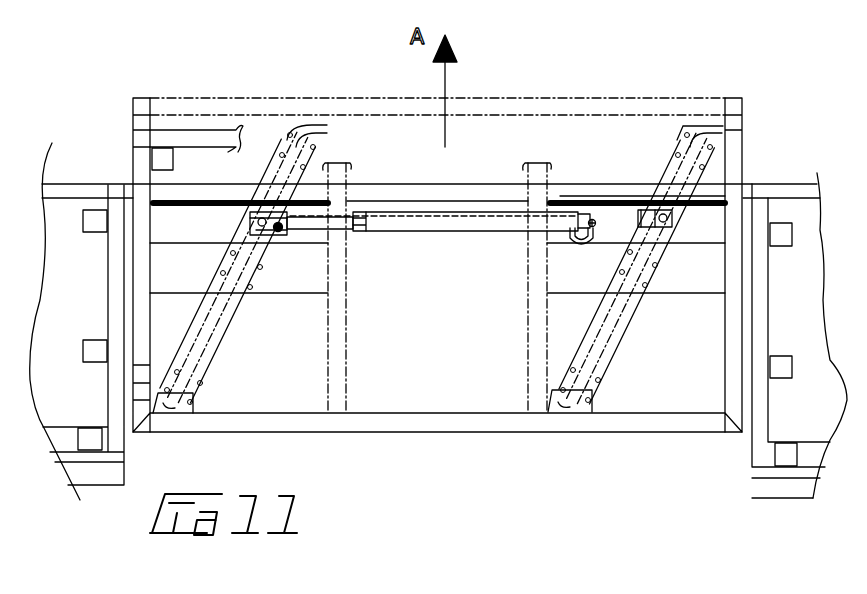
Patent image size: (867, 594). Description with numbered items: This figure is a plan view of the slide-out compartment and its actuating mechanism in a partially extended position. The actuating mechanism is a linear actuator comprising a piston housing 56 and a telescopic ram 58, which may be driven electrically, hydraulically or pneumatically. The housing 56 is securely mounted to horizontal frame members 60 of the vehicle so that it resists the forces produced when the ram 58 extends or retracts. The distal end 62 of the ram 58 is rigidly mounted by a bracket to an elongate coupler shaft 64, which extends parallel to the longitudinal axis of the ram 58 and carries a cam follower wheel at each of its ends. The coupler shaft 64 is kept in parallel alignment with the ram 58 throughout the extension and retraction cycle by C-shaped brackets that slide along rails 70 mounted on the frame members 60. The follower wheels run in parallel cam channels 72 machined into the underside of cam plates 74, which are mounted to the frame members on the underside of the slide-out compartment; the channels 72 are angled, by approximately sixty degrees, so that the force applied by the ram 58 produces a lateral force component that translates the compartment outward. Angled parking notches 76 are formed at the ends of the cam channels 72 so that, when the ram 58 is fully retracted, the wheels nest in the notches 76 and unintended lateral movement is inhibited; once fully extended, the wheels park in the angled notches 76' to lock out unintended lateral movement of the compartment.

The piston housing 56 is at (450, 232).
The telescopic ram 58 is at (323, 224).
The horizontal frame members 60 is at (571, 193).
The distal end 62 is at (308, 228).
The coupler shaft 64 is at (443, 218).
The rails 70 is at (231, 210).
The cam channels 72 is at (215, 318).
The cam plates 74 is at (218, 338).
The angled parking notches 76 is at (505, 100).
The angled parking notches 76' is at (385, 430).